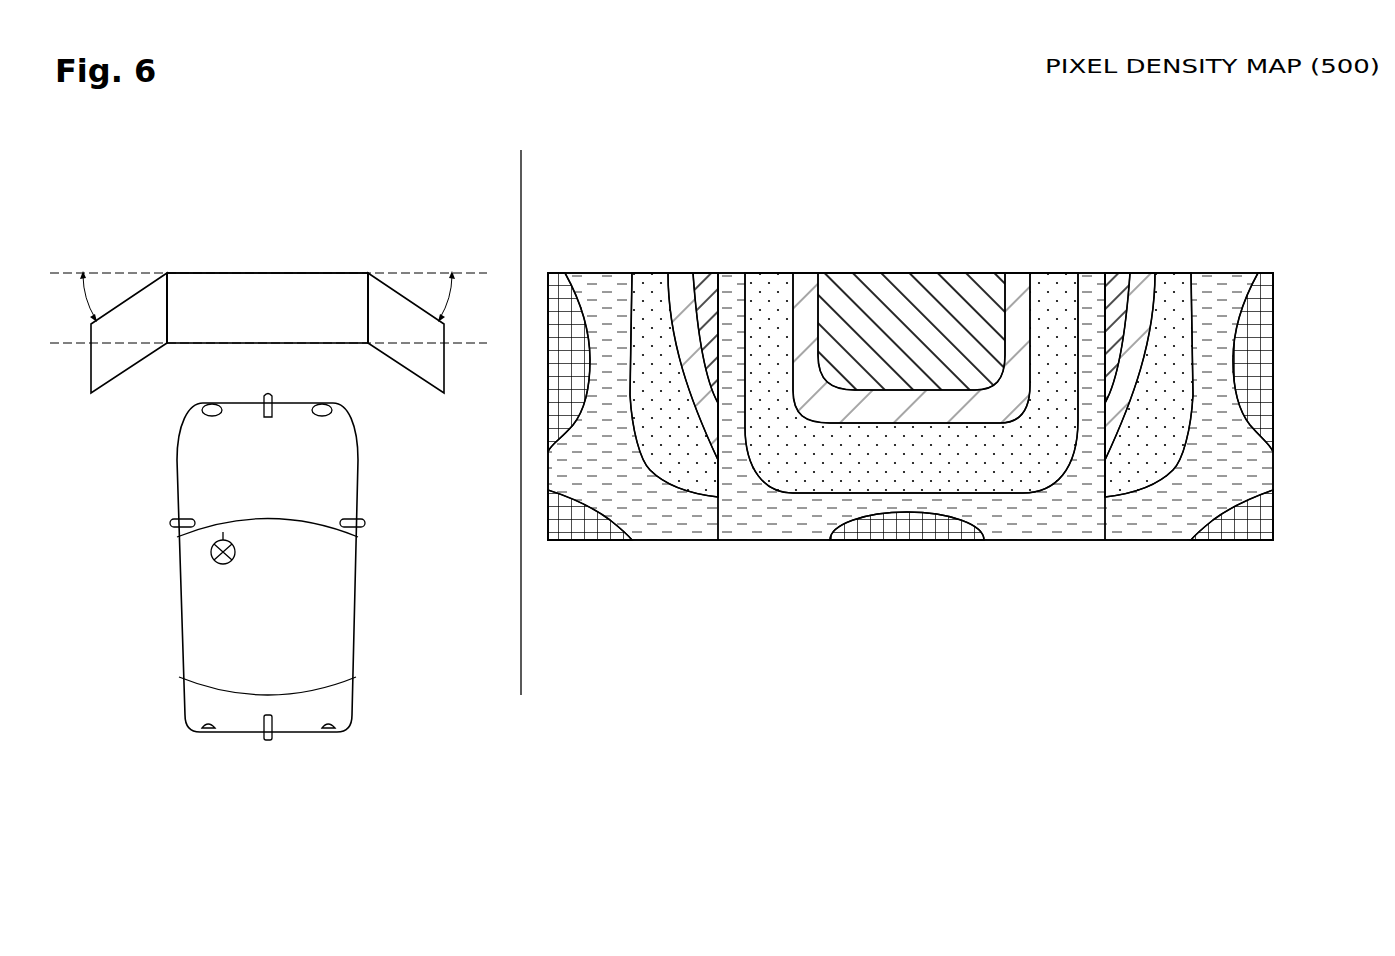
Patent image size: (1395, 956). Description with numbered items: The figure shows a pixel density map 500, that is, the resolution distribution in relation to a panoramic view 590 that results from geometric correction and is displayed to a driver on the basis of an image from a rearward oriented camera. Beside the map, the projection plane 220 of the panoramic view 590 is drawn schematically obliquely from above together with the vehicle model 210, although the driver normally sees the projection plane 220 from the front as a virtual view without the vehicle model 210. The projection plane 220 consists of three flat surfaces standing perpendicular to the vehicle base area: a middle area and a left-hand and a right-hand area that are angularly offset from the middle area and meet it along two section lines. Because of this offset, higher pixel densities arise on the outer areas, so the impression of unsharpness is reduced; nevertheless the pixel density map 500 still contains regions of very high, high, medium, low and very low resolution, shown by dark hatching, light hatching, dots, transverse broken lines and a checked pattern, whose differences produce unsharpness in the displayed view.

The panoramic view 590 is at (398, 162).
The pixel density map 500 is at (1158, 165).
The projection plane 220 is at (307, 272).
The vehicle model 210 is at (320, 608).